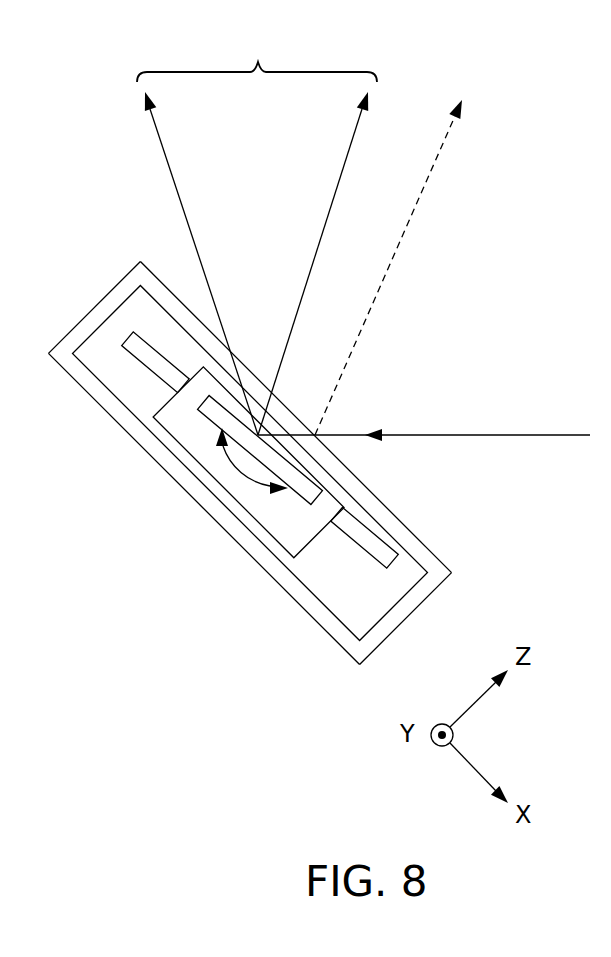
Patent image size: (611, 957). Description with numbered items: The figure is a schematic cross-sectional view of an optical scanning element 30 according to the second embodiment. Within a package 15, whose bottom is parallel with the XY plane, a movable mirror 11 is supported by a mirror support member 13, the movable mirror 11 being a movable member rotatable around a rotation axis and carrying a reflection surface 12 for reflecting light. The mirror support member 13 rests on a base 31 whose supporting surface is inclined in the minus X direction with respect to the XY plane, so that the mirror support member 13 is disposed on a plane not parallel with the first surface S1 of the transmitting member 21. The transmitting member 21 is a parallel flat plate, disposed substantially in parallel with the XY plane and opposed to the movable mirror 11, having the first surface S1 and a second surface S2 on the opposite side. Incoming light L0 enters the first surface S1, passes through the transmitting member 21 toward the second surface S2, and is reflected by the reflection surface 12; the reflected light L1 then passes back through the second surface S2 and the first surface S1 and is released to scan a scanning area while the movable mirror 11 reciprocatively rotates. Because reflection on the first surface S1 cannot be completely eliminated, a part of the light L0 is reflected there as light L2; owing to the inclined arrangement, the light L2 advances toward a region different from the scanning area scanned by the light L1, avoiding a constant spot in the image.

The optical scanning element 30 is at (120, 208).
The base 31 is at (350, 612).
The package 15 is at (295, 600).
The first surface S1 is at (372, 490).
The movable mirror 11 is at (308, 489).
The reflection surface 12 is at (225, 402).
The mirror support member 13 is at (135, 345).
The second surface S2 is at (225, 402).
The transmitting member 21 is at (378, 461).
The light L0 is at (424, 412).
The light L1 is at (257, 229).
The light L2 is at (437, 170).